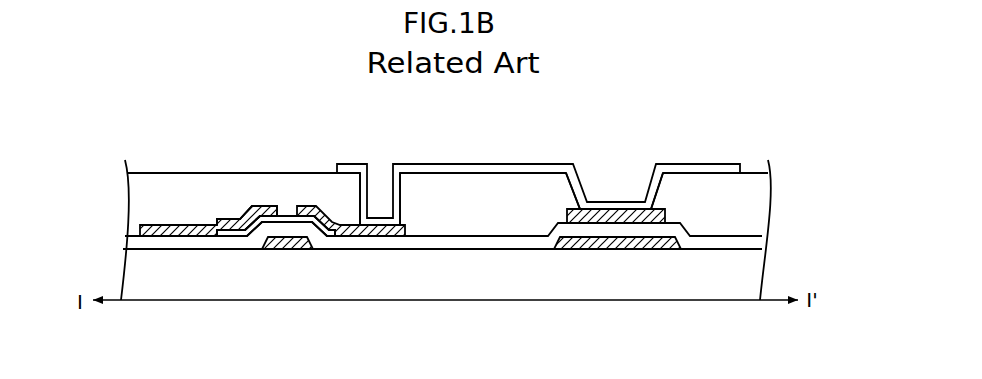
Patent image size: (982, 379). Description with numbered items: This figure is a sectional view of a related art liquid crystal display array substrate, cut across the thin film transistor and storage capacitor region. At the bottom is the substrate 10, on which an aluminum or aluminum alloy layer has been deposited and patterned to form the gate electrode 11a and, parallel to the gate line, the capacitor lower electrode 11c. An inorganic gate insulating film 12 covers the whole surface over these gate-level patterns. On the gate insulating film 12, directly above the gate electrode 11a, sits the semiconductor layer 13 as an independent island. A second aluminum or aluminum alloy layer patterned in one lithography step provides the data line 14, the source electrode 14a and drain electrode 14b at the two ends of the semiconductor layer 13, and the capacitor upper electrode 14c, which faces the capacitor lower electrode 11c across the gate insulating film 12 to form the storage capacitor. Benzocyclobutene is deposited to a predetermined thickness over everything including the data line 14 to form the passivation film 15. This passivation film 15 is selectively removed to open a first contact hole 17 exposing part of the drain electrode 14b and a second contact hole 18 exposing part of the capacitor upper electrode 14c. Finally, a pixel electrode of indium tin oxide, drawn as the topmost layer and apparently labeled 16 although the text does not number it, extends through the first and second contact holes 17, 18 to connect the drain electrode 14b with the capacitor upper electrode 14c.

The substrate 10 is at (752, 270).
The gate electrode 11a is at (287, 249).
The capacitor lower electrode 11c is at (615, 240).
The gate insulating film 12 is at (481, 240).
The semiconductor layer 13 is at (240, 237).
The data line 14 is at (181, 230).
The source electrode 14a is at (263, 205).
The drain electrode 14b is at (310, 205).
The capacitor upper electrode 14c is at (633, 213).
The passivation film 15 is at (713, 192).
The pixel electrode 16 is at (485, 165).
The first contact hole 17 is at (378, 192).
The second contact hole 18 is at (605, 190).